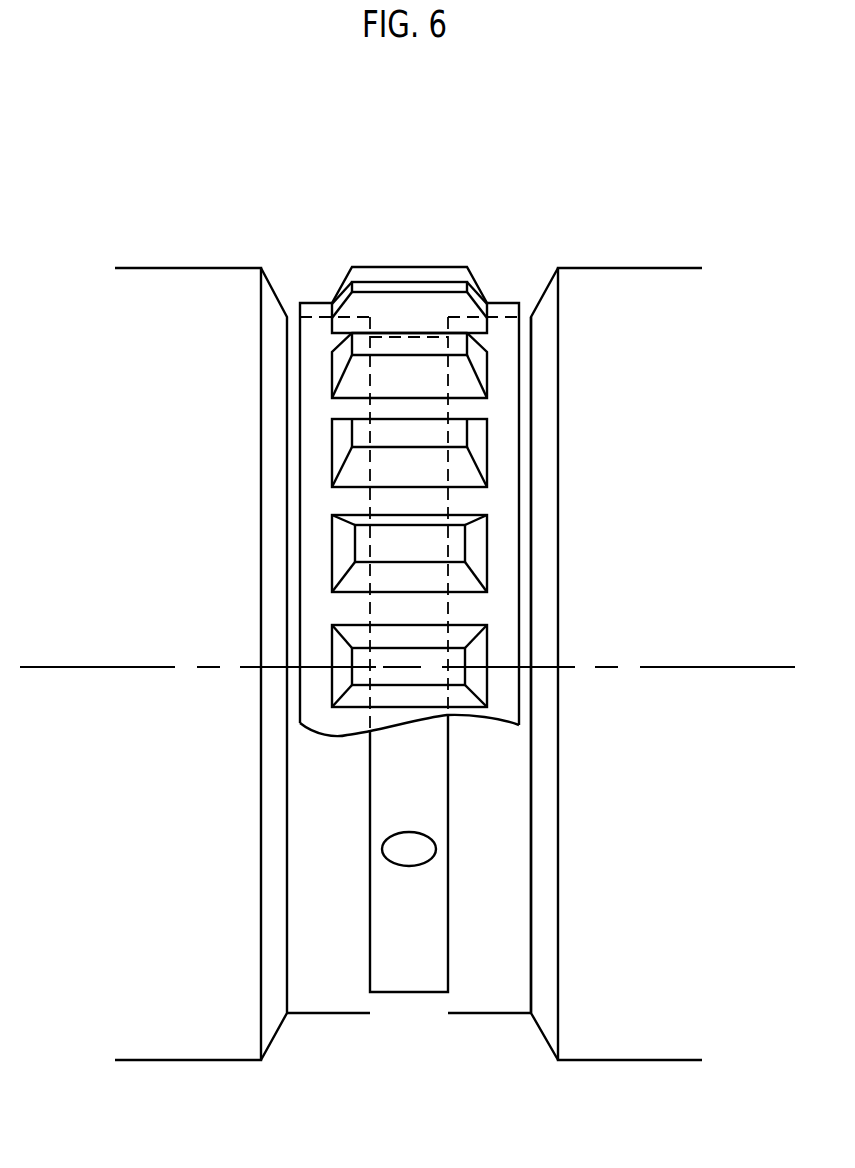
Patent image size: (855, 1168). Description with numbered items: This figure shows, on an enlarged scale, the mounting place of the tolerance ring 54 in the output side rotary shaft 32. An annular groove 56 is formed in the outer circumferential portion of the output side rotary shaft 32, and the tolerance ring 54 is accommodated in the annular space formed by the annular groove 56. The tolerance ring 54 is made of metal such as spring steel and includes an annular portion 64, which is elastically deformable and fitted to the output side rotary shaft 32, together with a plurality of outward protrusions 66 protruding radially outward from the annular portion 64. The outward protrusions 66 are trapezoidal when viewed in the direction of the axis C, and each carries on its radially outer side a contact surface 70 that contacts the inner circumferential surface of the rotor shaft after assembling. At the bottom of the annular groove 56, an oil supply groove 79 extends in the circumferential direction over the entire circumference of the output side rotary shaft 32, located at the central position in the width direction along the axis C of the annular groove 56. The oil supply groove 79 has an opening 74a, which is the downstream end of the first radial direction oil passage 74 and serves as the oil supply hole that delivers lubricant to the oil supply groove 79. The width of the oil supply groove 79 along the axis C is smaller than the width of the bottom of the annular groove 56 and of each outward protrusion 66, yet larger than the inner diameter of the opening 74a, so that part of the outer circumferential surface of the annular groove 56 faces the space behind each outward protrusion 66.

The output side rotary shaft 32 is at (613, 298).
The tolerance ring 54 is at (432, 265).
The annular groove 56 is at (483, 973).
The annular portion 64 is at (317, 328).
The outward protrusions 66 is at (338, 450).
The contact surface 70 is at (400, 658).
The first radial direction oil passage 74 is at (529, 840).
The opening 74a is at (408, 852).
The oil supply groove 79 is at (408, 953).
The axis C is at (713, 665).